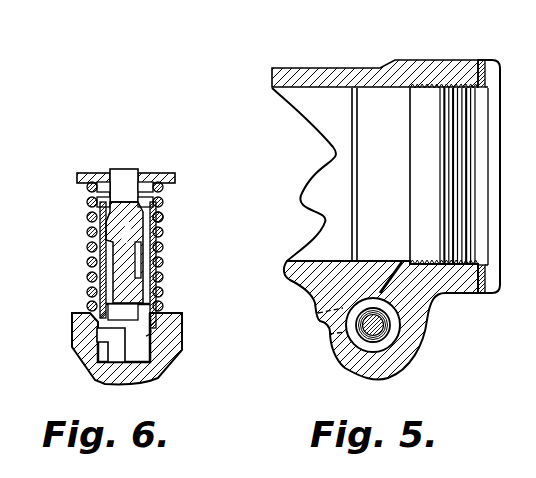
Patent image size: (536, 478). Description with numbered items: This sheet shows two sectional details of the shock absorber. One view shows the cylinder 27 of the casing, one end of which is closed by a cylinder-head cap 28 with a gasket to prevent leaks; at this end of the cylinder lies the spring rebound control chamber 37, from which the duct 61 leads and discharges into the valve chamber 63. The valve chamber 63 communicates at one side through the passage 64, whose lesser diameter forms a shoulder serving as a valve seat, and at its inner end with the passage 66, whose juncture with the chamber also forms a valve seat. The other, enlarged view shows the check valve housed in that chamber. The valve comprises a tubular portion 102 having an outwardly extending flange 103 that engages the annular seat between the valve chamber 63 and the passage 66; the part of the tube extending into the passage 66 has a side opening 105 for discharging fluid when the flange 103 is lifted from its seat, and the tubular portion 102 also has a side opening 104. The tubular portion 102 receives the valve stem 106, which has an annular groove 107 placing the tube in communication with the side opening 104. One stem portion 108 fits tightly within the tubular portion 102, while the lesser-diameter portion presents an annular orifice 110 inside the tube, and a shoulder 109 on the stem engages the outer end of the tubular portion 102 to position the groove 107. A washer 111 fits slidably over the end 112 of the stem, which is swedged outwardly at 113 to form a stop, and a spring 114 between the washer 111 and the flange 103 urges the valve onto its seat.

In FIG. 5, the cylinder 27 is at (318, 78).
In FIG. 5, the spring rebound control chamber 37 is at (376, 102).
In FIG. 5, the cylinder-head cap 28 is at (492, 70).
In FIG. 5, the duct 61 is at (393, 290).
In FIG. 5, the valve chamber 63 is at (399, 327).
In FIG. 5, the passage 64 is at (320, 324).
In FIG. 6, the washer 111 is at (167, 176).
In FIG. 6, the end of the valve stem 112 is at (128, 182).
In FIG. 6, the swedged portion 113 is at (109, 172).
In FIG. 6, the spring 114 is at (87, 201).
In FIG. 6, the shoulder 109 is at (165, 203).
In FIG. 6, the valve stem 106 is at (164, 223).
In FIG. 6, the stem portion 108 is at (108, 221).
In FIG. 6, the side opening 104 is at (92, 272).
In FIG. 6, the tubular portion 102 is at (155, 256).
In FIG. 6, the annular groove 107 is at (160, 278).
In FIG. 6, the flange 103 is at (96, 318).
In FIG. 6, the passage 66 is at (143, 375).
In FIG. 6, the annular orifice 110 is at (182, 320).
In FIG. 6, the side opening 105 is at (113, 337).